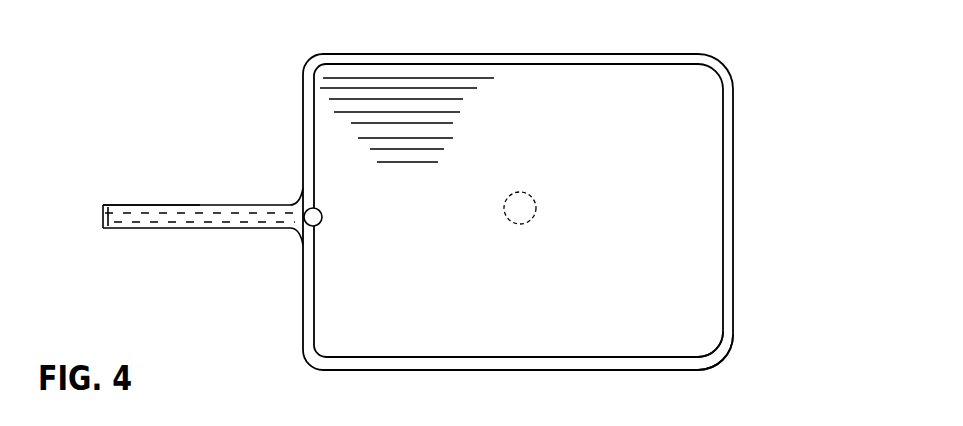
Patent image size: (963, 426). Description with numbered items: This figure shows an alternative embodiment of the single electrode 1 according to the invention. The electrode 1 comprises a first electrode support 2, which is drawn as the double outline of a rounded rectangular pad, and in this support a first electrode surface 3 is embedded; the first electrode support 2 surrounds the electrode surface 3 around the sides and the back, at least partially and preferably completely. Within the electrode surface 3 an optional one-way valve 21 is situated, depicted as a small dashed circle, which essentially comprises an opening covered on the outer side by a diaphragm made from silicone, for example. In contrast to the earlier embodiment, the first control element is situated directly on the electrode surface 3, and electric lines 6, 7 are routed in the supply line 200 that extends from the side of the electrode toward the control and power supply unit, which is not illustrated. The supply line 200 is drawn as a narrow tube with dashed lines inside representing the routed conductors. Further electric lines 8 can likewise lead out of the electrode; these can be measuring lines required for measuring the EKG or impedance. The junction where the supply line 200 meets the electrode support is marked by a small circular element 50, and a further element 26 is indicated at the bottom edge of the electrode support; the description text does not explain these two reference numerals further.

The electrode 1 is at (808, 92).
The first electrode support 2 is at (727, 355).
The first electrode surface 3 is at (675, 197).
The electric line 6 is at (102, 224).
The electric line 7 is at (103, 207).
The further electric lines 8 is at (102, 217).
The one-way valve 21 is at (520, 208).
The bottom seam 26 is at (654, 398).
The connector 50 is at (307, 205).
The supply line 200 is at (203, 229).